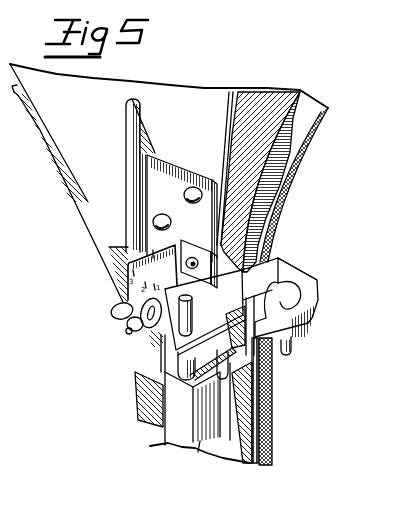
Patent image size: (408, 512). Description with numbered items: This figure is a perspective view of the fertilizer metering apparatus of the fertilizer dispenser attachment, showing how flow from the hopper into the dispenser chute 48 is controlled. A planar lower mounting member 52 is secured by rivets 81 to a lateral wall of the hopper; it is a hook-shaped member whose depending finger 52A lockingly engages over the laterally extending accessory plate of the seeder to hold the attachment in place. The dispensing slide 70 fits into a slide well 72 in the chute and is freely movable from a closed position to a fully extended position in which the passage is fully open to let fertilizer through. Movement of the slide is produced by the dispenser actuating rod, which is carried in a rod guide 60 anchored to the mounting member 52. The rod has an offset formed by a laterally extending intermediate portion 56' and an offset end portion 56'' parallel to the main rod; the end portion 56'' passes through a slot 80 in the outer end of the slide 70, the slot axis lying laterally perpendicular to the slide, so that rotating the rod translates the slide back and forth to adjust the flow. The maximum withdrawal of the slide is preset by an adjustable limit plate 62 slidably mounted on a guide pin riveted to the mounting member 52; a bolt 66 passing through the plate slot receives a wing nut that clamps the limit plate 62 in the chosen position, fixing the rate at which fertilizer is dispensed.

The dispenser chute 48 is at (172, 447).
The lower mounting member 52 is at (153, 151).
The depending finger 52A is at (205, 454).
The intermediate portion 56' is at (244, 402).
The offset end portion 56'' is at (319, 345).
The rod guide 60 is at (258, 362).
The adjustable limit plate 62 is at (265, 382).
The bolt 66 is at (126, 332).
The dispensing slide 70 is at (308, 272).
The slide well 72 is at (285, 266).
The slot 80 is at (292, 298).
The rivet 81 is at (184, 193).